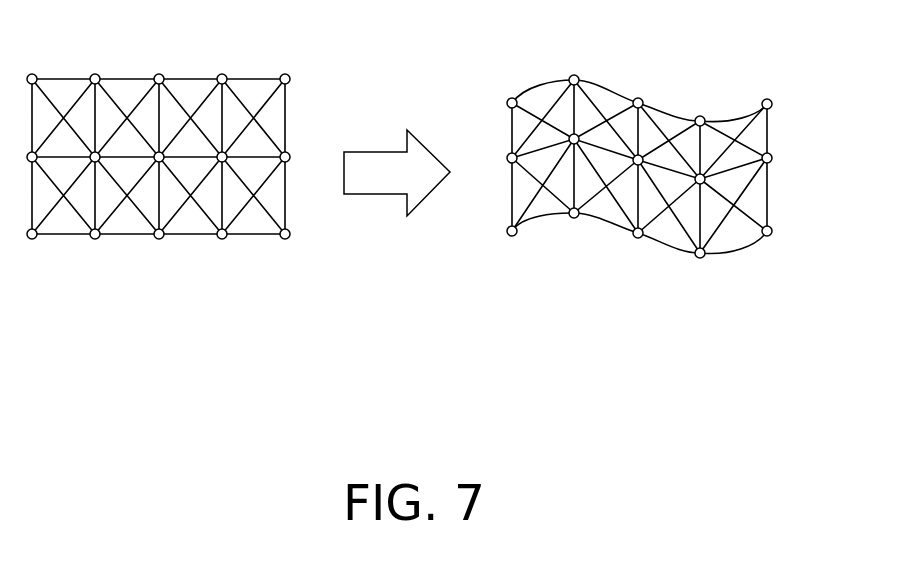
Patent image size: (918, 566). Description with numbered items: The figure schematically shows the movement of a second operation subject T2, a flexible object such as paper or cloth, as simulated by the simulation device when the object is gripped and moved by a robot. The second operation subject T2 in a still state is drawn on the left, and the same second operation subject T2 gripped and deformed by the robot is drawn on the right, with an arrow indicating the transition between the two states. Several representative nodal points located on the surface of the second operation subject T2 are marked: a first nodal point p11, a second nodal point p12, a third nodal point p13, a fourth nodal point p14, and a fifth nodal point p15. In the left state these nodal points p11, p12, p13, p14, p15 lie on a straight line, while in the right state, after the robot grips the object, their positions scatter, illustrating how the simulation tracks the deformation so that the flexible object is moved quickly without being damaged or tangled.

The second operation subject T2 is at (259, 274).
The first nodal point p11 is at (35, 74).
The second nodal point p12 is at (97, 74).
The third nodal point p13 is at (161, 74).
The fourth nodal point p14 is at (224, 74).
The fifth nodal point p15 is at (287, 74).